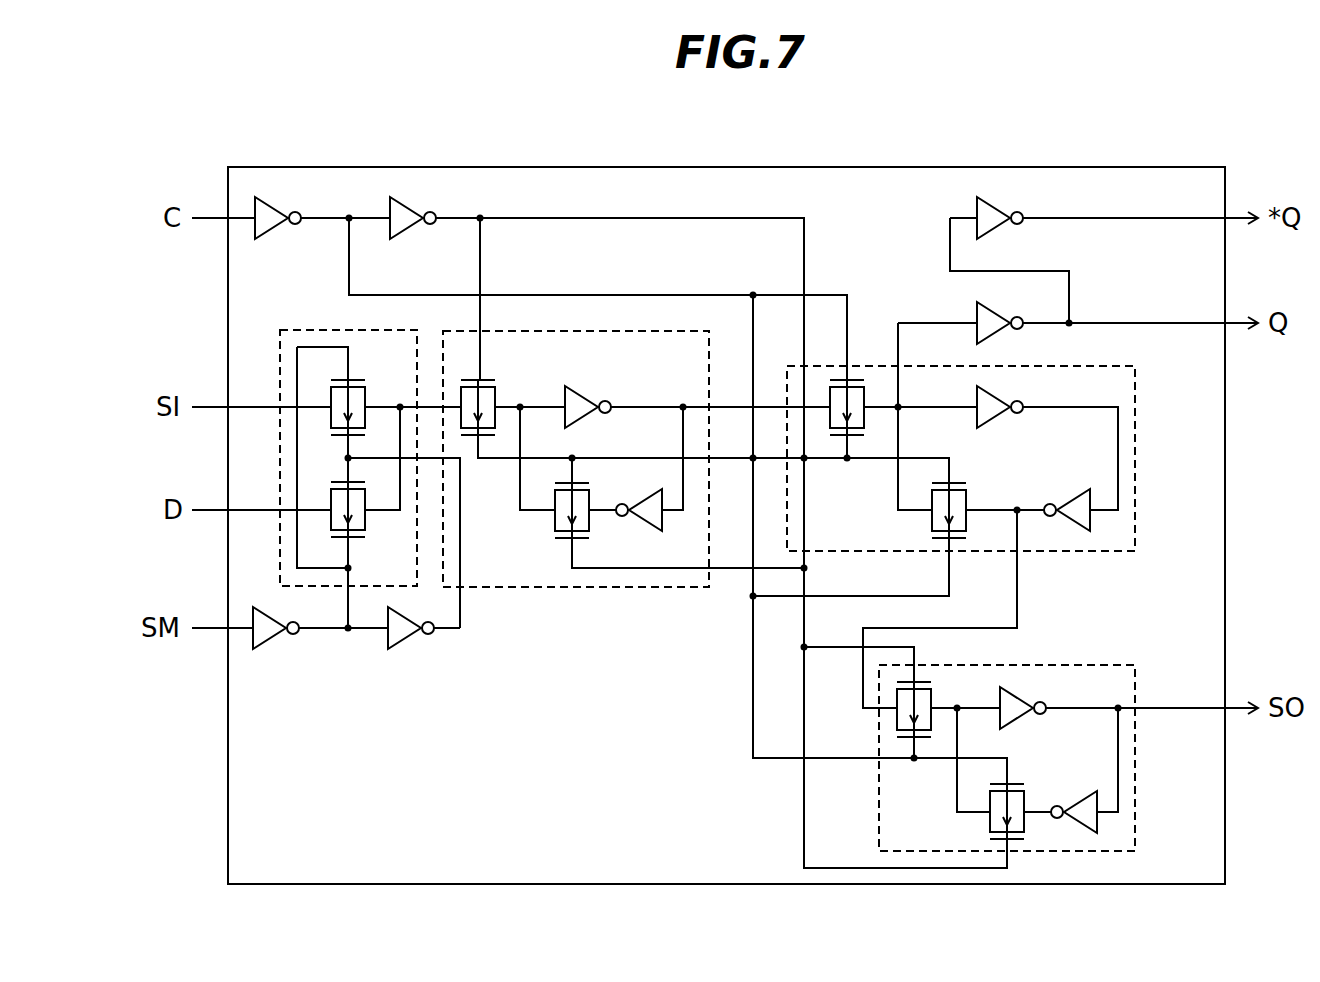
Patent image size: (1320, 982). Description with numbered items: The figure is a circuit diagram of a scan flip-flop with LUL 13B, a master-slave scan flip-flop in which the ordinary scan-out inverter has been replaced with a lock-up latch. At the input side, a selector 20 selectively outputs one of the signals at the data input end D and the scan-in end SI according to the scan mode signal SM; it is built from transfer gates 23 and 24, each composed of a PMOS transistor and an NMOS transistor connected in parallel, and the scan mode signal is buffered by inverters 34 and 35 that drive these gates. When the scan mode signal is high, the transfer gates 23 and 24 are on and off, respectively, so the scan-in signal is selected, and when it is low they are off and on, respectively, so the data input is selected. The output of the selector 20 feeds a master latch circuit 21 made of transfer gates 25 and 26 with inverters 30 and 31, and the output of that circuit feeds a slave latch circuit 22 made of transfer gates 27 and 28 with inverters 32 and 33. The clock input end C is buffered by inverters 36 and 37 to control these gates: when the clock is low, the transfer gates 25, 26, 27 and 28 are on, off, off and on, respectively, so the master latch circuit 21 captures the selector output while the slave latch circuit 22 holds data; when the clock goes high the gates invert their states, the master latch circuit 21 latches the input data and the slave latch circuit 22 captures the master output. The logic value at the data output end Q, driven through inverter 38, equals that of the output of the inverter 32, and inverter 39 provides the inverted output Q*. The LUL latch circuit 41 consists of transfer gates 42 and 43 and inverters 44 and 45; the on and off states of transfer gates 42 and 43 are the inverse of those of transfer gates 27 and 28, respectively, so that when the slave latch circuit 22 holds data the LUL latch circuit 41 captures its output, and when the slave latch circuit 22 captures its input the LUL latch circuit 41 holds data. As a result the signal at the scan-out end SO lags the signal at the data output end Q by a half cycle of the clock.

The scan flip-flop with LUL 13B is at (717, 167).
The selector 20 is at (313, 330).
The master latch circuit 21 is at (575, 587).
The slave latch circuit 22 is at (1120, 551).
The transfer gate 23 is at (366, 395).
The transfer gate 24 is at (366, 521).
The transfer gate 25 is at (496, 395).
The transfer gate 26 is at (590, 523).
The transfer gate 27 is at (865, 420).
The transfer gate 28 is at (967, 496).
The CMOS inverter 30 is at (582, 392).
The CMOS inverter 31 is at (648, 528).
The CMOS inverter 32 is at (994, 392).
The CMOS inverter 33 is at (1070, 494).
The CMOS inverter 34 is at (275, 640).
The CMOS inverter 35 is at (408, 640).
The CMOS inverter 36 is at (272, 203).
The CMOS inverter 37 is at (407, 203).
The CMOS inverter 38 is at (994, 308).
The CMOS inverter 39 is at (994, 203).
The LUL latch circuit 41 is at (1135, 762).
The transfer gate 42 is at (932, 700).
The transfer gate 43 is at (1024, 803).
The inverter 44 is at (1020, 722).
The inverter 45 is at (1085, 826).